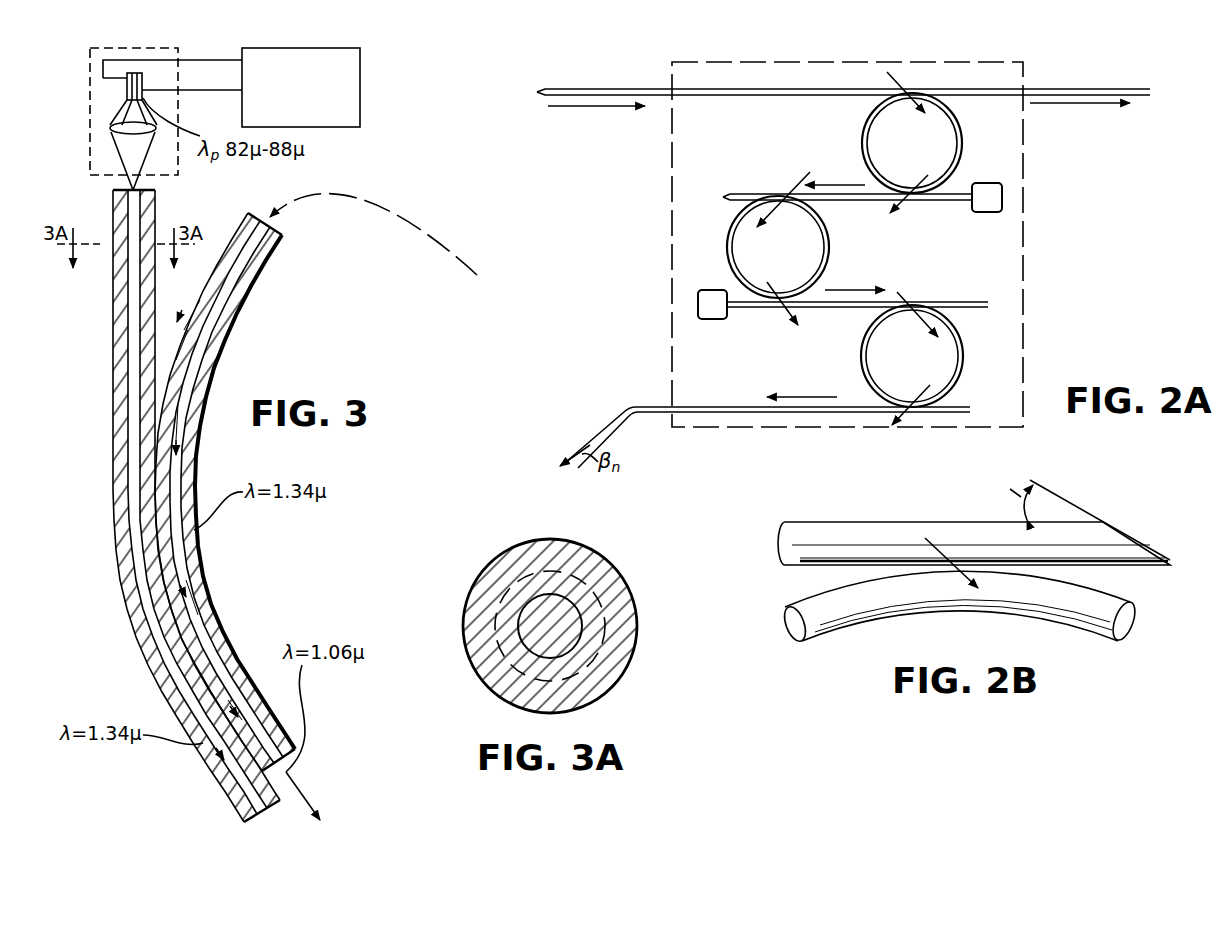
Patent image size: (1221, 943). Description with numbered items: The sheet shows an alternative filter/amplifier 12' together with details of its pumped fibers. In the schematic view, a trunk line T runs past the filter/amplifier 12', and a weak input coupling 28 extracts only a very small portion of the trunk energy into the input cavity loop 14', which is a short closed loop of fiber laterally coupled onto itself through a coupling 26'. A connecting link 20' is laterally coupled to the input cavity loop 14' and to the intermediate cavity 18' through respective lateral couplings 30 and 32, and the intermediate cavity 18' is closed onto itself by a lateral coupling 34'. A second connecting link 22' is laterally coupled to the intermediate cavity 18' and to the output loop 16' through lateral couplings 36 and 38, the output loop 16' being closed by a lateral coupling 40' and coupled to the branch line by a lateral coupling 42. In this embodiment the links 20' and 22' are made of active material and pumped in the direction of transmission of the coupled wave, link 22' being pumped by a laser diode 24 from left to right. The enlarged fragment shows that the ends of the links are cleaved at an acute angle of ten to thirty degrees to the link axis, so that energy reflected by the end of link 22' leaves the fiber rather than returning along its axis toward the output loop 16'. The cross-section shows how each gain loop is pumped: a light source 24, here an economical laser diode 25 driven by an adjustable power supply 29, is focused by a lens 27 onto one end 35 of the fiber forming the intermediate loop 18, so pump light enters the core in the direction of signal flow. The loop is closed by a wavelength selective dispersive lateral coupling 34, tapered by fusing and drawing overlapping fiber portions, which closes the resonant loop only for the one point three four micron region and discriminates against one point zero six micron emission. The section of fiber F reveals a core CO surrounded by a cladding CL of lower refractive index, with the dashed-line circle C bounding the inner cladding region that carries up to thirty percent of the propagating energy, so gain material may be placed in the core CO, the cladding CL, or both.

In FIG. 3, the pumping light source 24 is at (178, 106).
In FIG. 2A, the pumping light source 24 is at (1002, 200).
In FIG. 3, the laser diode 25 is at (127, 92).
In FIG. 3, the lens 27 is at (114, 131).
In FIG. 3, the electric power supply 29 is at (242, 111).
In FIG. 3, the wavelength selective lateral coupling 34 is at (166, 506).
In FIG. 3, the fiber end 35 is at (152, 189).
In FIG. 3, the intermediate loop 18 is at (316, 477).
In FIG. 2A, the filter/amplifier 12' is at (881, 244).
In FIG. 2A, the trunk line T is at (589, 89).
In FIG. 2A, the input cavity loop 14' is at (938, 143).
In FIG. 2A, the output loop 16' is at (941, 356).
In FIG. 2B, the output loop 16' is at (959, 612).
In FIG. 2A, the intermediate cavity 18' is at (807, 247).
In FIG. 2A, the connecting link 20' is at (837, 151).
In FIG. 2A, the connecting link 22' is at (924, 277).
In FIG. 2B, the connecting link 22' is at (974, 521).
In FIG. 2A, the coupling 26' is at (840, 117).
In FIG. 2A, the lateral coupling 34' is at (712, 221).
In FIG. 2A, the lateral coupling 40' is at (837, 346).
In FIG. 2A, the input coupling 28 is at (920, 110).
In FIG. 2A, the lateral coupling 30 is at (915, 196).
In FIG. 2A, the lateral coupling 32 is at (778, 198).
In FIG. 2A, the lateral coupling 36 is at (778, 298).
In FIG. 2A, the lateral coupling 38 is at (920, 306).
In FIG. 2B, the lateral coupling 38 is at (955, 562).
In FIG. 2A, the lateral coupling 42 is at (918, 411).
In FIG. 3A, the optical fiber F is at (490, 556).
In FIG. 3A, the dashed-line circle C is at (604, 554).
In FIG. 3A, the core CO is at (576, 626).
In FIG. 3A, the cladding CL is at (622, 662).